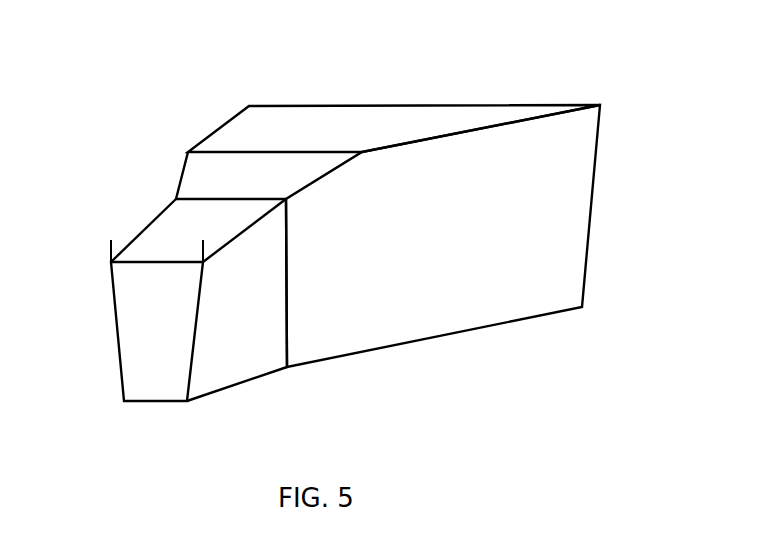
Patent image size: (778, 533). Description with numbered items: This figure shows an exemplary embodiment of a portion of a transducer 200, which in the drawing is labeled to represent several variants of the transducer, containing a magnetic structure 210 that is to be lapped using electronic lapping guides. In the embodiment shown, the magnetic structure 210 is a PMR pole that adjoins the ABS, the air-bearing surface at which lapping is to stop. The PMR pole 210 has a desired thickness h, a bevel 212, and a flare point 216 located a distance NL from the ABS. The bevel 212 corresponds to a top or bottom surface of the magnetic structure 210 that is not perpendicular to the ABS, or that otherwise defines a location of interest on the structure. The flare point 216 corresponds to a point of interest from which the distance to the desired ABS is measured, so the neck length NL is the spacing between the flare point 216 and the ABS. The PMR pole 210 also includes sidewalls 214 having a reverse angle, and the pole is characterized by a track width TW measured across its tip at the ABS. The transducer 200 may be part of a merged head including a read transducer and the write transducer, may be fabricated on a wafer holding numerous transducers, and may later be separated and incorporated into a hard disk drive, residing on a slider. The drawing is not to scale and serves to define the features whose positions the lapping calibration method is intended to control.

The transducer 200 is at (344, 25).
The magnetic structure 210 is at (597, 142).
The bevel 212 is at (148, 198).
The sidewalls 214 is at (193, 356).
The flare point 216 is at (287, 340).
The track width TW is at (263, 250).
The thickness h is at (160, 274).
The distance from flare point to ABS NL is at (274, 316).
The air-bearing surface ABS is at (188, 417).